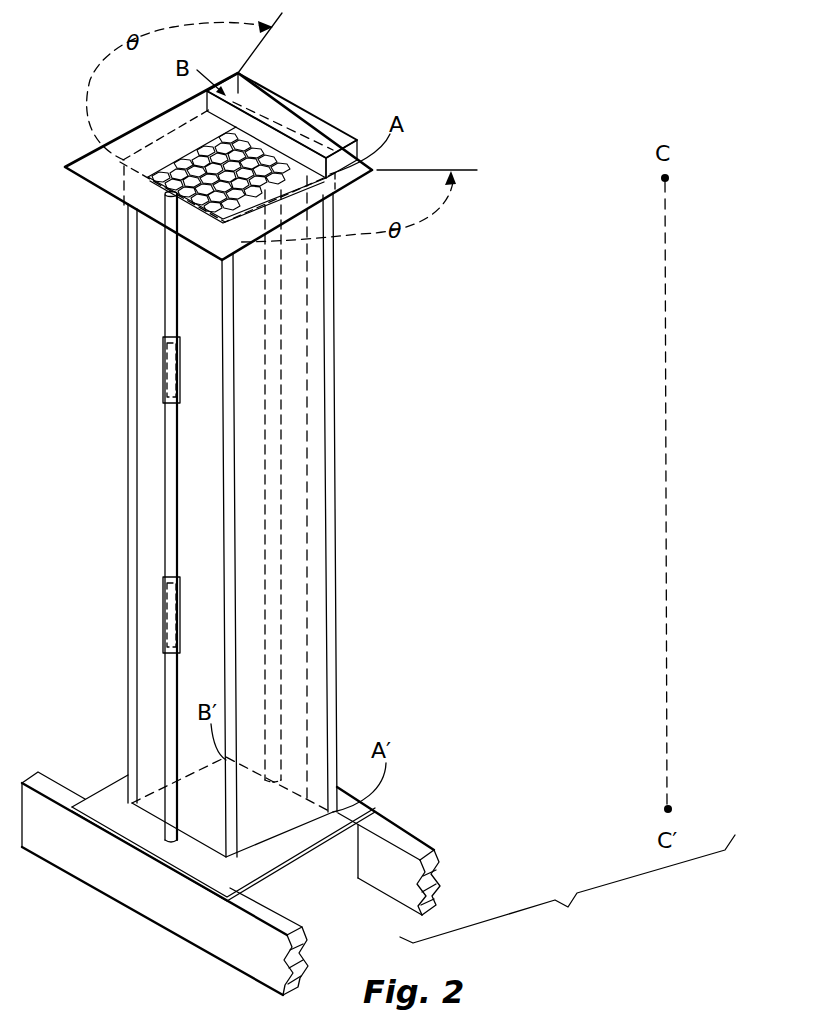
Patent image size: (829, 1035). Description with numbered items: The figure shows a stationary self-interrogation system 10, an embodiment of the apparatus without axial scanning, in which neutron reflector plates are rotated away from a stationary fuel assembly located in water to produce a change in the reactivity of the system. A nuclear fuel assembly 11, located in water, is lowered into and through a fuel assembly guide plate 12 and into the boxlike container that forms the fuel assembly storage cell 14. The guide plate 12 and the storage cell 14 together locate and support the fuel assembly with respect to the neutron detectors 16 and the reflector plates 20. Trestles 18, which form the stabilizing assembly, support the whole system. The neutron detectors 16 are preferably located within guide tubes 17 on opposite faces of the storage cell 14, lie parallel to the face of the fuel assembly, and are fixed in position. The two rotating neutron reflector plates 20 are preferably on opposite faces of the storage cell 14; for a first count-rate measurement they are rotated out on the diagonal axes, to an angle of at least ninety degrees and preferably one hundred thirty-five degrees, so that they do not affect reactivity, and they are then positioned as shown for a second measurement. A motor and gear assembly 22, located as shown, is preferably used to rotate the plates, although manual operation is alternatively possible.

The stationary self-interrogation system 10 is at (508, 473).
The nuclear fuel assembly 11 is at (160, 171).
The fuel assembly guide plate 12 is at (348, 185).
The fuel assembly storage cell 14 is at (308, 473).
The neutron detector 16 is at (167, 597).
The guide tube 17 is at (167, 433).
The trestle 18 is at (207, 957).
The rotating neutron reflector plate 20 is at (325, 393).
The motor and gear assembly 22 is at (287, 110).